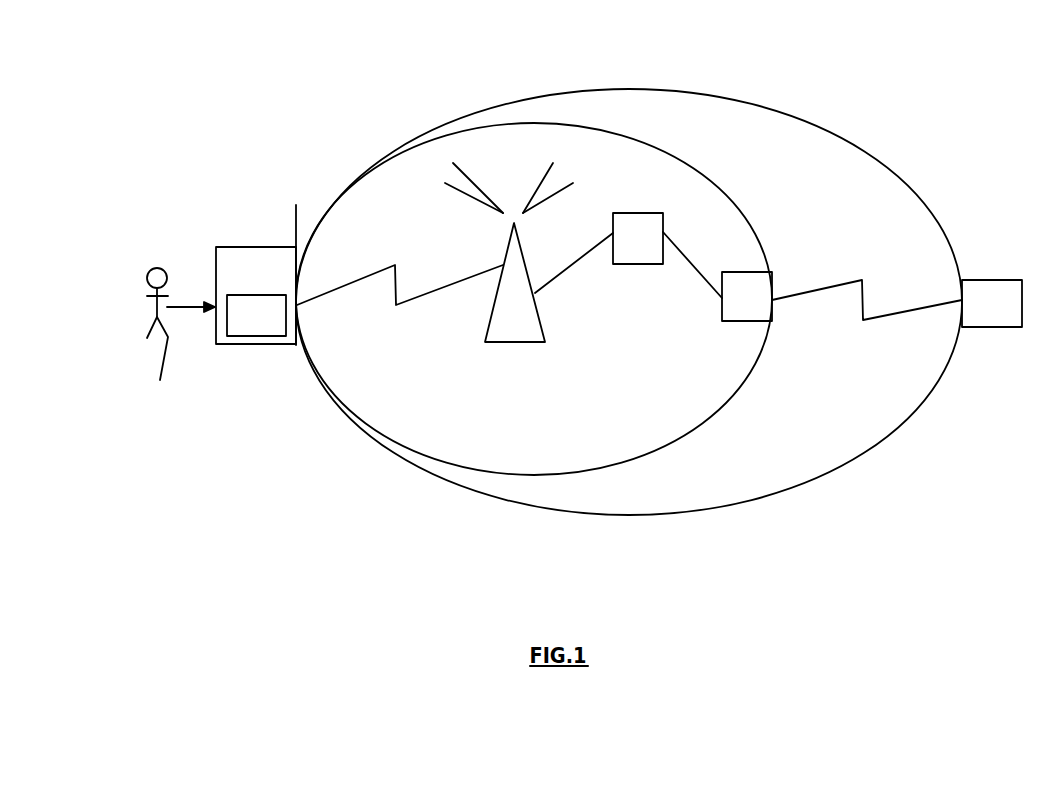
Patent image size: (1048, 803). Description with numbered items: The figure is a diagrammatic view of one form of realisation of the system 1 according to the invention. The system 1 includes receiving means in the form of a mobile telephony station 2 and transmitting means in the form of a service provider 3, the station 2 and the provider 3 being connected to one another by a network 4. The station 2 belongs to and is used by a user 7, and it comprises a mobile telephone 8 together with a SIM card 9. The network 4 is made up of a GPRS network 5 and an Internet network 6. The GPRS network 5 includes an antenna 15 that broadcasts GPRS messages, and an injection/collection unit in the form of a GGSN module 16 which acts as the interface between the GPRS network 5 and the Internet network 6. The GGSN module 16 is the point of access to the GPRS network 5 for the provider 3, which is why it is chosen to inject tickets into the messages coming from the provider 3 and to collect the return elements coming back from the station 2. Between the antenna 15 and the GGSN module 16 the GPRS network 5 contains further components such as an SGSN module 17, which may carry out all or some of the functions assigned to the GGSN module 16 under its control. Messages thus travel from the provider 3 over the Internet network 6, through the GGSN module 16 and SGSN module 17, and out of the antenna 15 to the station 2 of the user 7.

The system 1 is at (468, 81).
The mobile telephony station 2 is at (253, 215).
The service provider 3 is at (992, 280).
The network 4 is at (655, 515).
The GPRS network 5 is at (743, 383).
The Internet network 6 is at (913, 312).
The user 7 is at (181, 338).
The mobile telephone 8 is at (278, 347).
The SIM card 9 is at (237, 338).
The antenna 15 is at (513, 342).
The GGSN module 16 is at (742, 321).
The SGSN module 17 is at (634, 264).